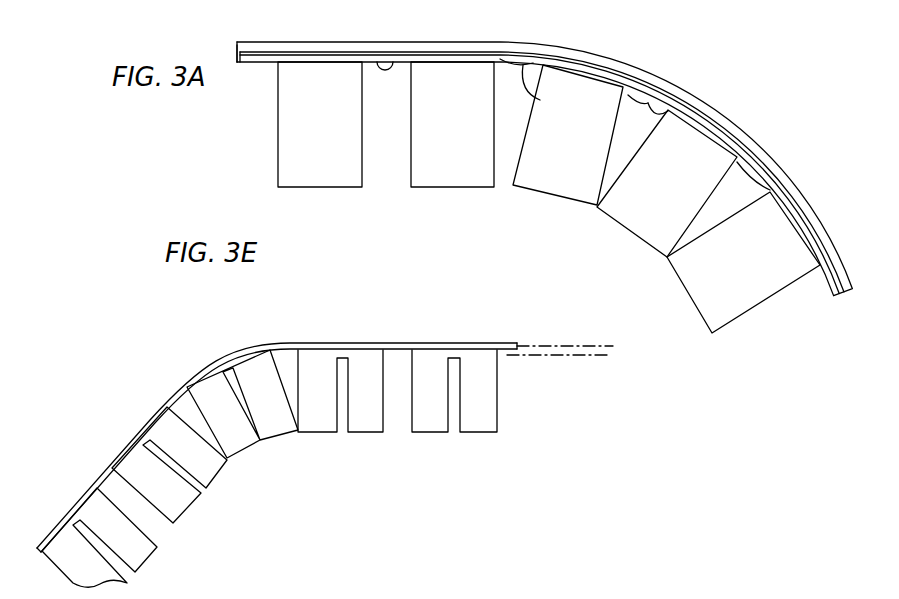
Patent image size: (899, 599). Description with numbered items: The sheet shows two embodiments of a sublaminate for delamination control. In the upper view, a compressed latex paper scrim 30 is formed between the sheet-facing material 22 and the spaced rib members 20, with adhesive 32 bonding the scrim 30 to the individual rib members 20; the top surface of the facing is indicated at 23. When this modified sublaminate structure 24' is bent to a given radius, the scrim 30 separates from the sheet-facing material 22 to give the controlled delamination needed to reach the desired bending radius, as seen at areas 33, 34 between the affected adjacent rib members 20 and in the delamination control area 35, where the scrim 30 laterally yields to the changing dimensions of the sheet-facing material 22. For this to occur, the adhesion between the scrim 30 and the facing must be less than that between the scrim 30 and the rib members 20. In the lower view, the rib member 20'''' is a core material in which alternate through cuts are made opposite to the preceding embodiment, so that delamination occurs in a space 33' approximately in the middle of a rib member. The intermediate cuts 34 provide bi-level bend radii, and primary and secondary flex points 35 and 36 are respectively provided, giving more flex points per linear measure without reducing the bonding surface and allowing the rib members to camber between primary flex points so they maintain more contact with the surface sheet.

In FIG. 3A, the rib members 20 is at (549, 197).
In FIG. 3A, the sheet-facing material 22 is at (308, 41).
In FIG. 3A, the outer surface of strip 23 is at (661, 5).
In FIG. 3A, the compressed latex paper scrim 30 is at (255, 63).
In FIG. 3A, the adhesive 32 is at (272, 50).
In FIG. 3A, the delamination area 33 is at (546, 91).
In FIG. 3A, the delamination area / intermediate cut 34 is at (661, 118).
In FIG. 3E, the delamination area / intermediate cut 34 is at (153, 442).
In FIG. 3A, the delamination control area / primary flex point 35 is at (590, 70).
In FIG. 3E, the delamination control area / primary flex point 35 is at (397, 356).
In FIG. 3E, the secondary flex point 36 is at (343, 352).
In FIG. 3A, the modified sublaminate structure 24' is at (800, 354).
In FIG. 3E, the rib member 20'''' is at (430, 416).
In FIG. 3E, the space / rib segment 33' is at (230, 373).